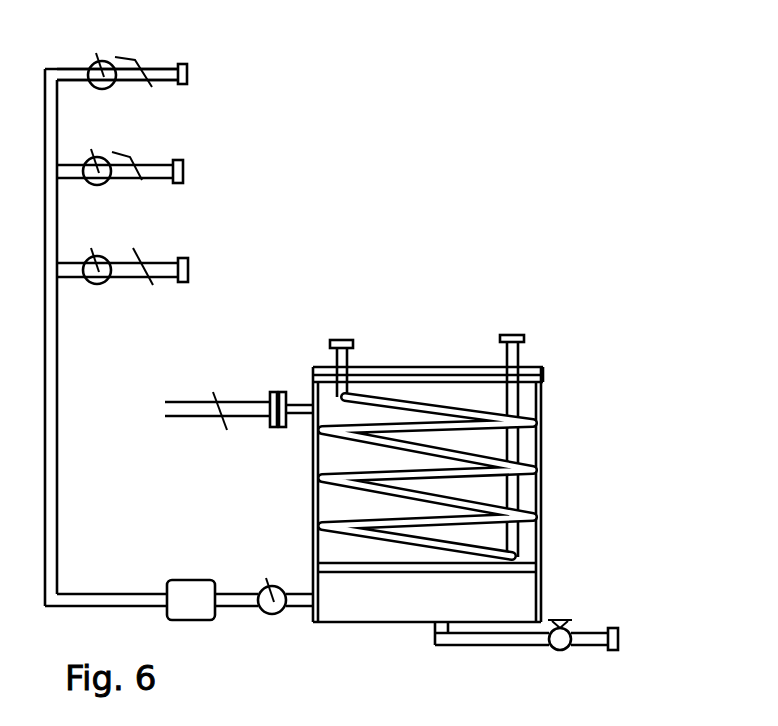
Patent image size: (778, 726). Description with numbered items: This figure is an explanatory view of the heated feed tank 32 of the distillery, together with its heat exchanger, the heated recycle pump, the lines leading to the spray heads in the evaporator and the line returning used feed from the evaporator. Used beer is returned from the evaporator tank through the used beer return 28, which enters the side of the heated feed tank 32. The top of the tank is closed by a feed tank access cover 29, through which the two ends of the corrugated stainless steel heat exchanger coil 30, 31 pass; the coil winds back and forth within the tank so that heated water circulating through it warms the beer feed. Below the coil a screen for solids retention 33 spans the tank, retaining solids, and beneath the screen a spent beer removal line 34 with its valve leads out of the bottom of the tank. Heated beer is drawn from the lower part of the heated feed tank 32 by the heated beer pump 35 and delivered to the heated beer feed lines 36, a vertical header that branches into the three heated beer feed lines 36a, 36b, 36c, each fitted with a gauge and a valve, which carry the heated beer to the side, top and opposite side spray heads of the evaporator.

The used beer return 28 is at (170, 398).
The feed tank access cover 29 is at (317, 370).
The corrugated stainless steel heat exchanger coil 30 is at (318, 335).
The corrugated stainless steel heat exchanger coil 31 is at (500, 335).
The heated feed tank 32 is at (540, 385).
The screen for solids retention 33 is at (545, 568).
The spent beer removal line 34 is at (490, 645).
The heated beer pump 35 is at (200, 580).
The heated beer feed lines 36 is at (111, 337).
The heated beer feed line 36a is at (200, 250).
The heated beer feed line 36b is at (176, 160).
The heated beer feed line 36c is at (190, 67).